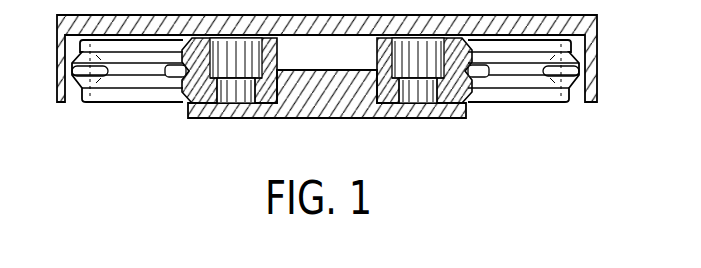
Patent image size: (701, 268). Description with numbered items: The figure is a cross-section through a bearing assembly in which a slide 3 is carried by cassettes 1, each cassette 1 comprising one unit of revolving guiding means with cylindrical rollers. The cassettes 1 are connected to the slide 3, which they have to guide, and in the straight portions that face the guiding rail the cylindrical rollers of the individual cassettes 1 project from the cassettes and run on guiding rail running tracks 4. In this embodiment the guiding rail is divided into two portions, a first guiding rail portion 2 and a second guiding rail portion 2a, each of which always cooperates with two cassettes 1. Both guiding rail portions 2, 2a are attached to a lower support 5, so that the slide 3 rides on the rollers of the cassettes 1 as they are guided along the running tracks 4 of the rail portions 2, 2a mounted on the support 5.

The cassette 1 is at (122, 98).
The guiding rail portion 2 is at (265, 92).
The guiding rail portion 2a is at (448, 97).
The slide 3 is at (586, 40).
The guiding rail running track 4 is at (173, 68).
The lower support 5 is at (312, 104).